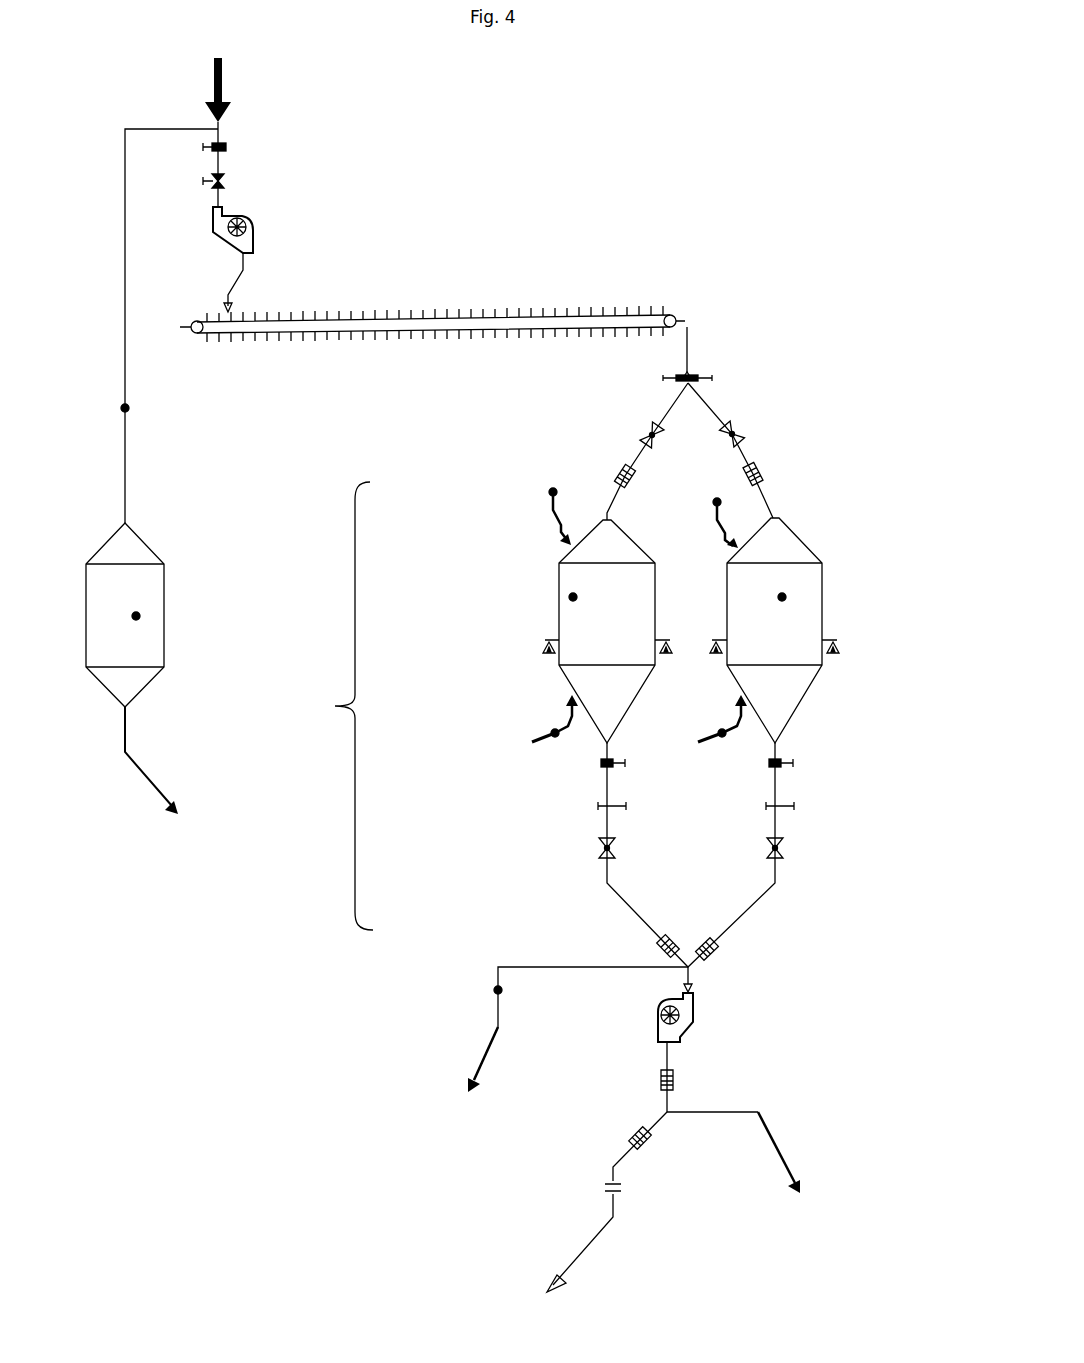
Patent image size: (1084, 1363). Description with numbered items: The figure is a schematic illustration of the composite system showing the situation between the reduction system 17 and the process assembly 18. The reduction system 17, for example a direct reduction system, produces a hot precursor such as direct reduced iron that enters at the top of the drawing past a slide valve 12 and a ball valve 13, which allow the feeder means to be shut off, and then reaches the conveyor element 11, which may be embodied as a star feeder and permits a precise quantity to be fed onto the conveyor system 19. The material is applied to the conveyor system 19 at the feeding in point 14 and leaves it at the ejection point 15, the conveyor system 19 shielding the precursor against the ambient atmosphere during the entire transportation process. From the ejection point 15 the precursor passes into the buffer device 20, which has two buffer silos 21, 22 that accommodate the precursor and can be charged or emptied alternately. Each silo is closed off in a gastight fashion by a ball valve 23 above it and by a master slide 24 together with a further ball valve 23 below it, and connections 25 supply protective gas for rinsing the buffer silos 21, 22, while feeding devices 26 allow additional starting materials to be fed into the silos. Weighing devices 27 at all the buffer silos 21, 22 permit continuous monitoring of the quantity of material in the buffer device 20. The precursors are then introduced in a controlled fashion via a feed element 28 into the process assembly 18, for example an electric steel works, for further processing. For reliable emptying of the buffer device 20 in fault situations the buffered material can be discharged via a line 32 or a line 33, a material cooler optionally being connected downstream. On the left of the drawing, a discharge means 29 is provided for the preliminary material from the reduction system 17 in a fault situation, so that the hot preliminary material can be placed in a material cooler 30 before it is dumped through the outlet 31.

The conveyor element 11 is at (272, 235).
The slide valve 12 is at (240, 146).
The control valve 13 is at (240, 183).
The feeding in point 14 is at (217, 352).
The ejection point 15 is at (682, 290).
The reduction system 17 is at (241, 90).
The process assembly 18 is at (583, 1220).
The conveyor system 19 is at (488, 300).
The buffer device 20 is at (333, 706).
The buffer silo 21 is at (573, 597).
The buffer silo 22 is at (782, 597).
The ball valve 23 is at (628, 430).
The master slide 24 is at (583, 768).
The connection 25 is at (555, 732).
The feeding device 26 is at (717, 502).
The weighing device 27 is at (845, 660).
The feed element 28 is at (708, 1001).
The discharge means 29 is at (125, 408).
The material cooler 30 is at (136, 616).
The separator outlet 31 is at (158, 786).
The line 32 is at (498, 992).
The line 33 is at (791, 1175).